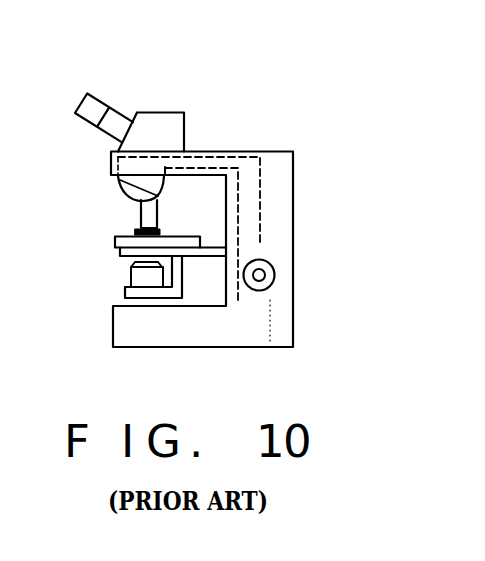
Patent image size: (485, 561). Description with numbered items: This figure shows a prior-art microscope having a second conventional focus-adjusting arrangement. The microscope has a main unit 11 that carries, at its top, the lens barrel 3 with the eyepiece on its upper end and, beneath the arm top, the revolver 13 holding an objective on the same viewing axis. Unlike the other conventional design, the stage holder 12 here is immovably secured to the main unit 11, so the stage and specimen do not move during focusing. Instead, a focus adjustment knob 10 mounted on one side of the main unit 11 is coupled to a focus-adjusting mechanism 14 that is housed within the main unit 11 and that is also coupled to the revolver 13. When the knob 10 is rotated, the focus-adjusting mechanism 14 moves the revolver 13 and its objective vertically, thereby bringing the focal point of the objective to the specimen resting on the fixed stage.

The lens barrel 3 is at (180, 129).
The focus adjustment knob 10 is at (263, 276).
The main unit 11 is at (295, 232).
The stage holder 12 is at (215, 232).
The revolver 13 is at (118, 180).
The focus-adjusting mechanism 14 is at (266, 150).